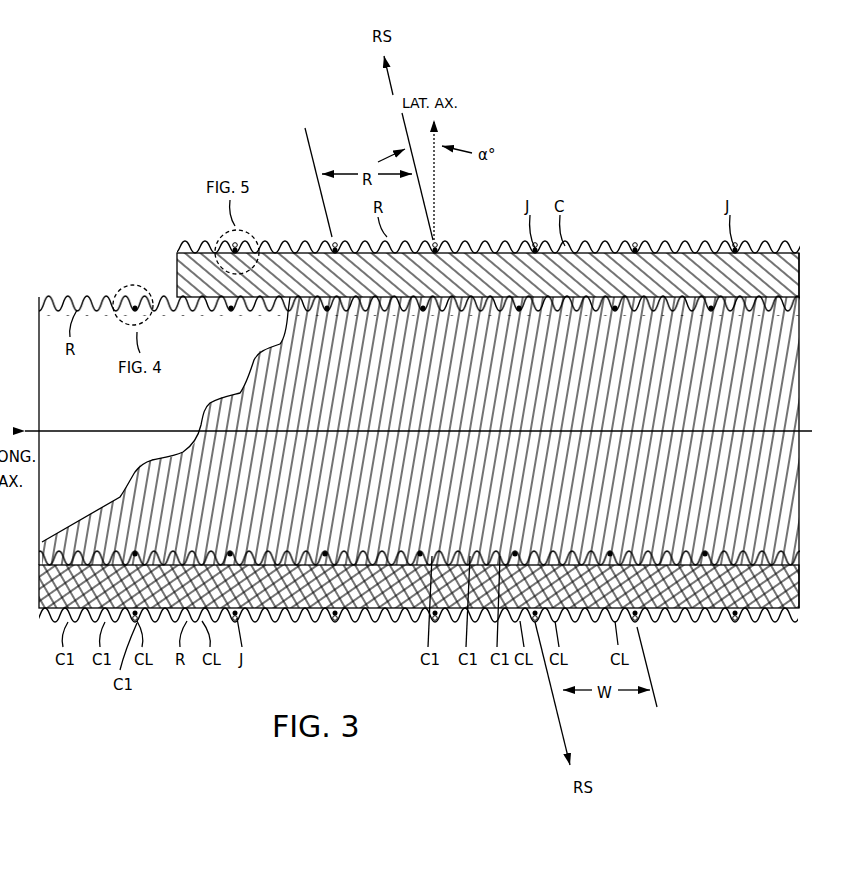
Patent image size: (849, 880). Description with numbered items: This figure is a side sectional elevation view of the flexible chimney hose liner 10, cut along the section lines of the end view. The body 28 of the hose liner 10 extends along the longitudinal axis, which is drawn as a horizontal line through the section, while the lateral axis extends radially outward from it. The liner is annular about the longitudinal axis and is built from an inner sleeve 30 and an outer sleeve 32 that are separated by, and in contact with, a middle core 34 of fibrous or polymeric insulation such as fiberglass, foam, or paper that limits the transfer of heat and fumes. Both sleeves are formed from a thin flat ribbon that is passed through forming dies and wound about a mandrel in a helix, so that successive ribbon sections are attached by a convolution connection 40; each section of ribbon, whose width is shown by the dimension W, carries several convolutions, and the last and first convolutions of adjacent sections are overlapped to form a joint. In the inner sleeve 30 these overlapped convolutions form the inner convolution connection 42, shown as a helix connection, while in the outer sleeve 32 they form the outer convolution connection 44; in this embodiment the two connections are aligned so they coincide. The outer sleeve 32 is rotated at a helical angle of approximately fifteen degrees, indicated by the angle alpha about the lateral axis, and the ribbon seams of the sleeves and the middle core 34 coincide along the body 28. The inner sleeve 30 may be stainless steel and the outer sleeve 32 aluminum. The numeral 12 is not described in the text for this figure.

The hose liner 10 is at (417, 408).
The longitudinal axis 12 is at (406, 402).
The body 28 is at (788, 372).
The inner sleeve 30 is at (210, 311).
The outer sleeve 32 is at (763, 247).
The middle core 34 is at (188, 270).
The convolution connection 40 is at (322, 560).
The inner convolution connection 42 is at (130, 547).
The outer convolution connection 44 is at (633, 247).